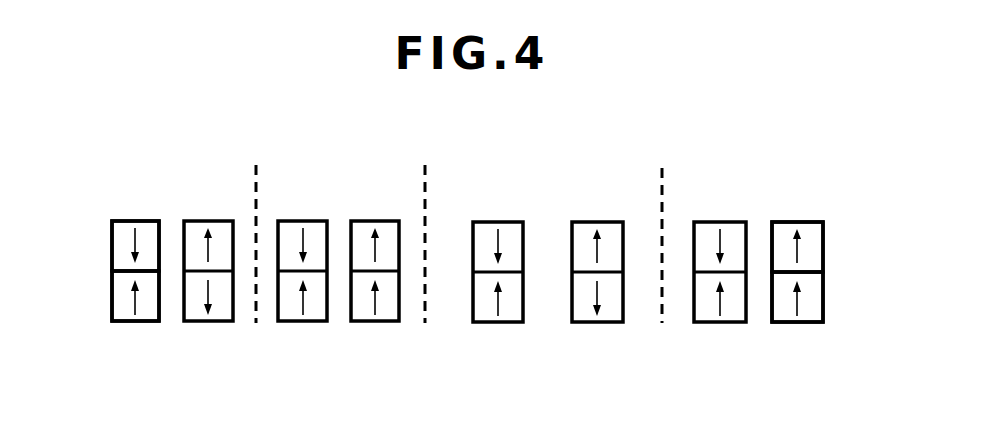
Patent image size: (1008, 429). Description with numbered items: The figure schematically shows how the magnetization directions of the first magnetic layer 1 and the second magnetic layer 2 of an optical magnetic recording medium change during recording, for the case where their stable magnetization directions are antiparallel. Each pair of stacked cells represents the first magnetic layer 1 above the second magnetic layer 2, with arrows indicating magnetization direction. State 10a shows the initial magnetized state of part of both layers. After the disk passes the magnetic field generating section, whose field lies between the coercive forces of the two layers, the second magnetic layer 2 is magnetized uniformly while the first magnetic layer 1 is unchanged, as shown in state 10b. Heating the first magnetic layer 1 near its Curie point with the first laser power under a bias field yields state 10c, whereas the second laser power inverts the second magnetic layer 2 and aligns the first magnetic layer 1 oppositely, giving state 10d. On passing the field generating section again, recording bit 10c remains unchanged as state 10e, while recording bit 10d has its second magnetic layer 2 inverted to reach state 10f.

The initial magnetized state 10a is at (176, 215).
The uniformly magnetized state 10b is at (343, 215).
The recording bit at first laser power 10c is at (498, 216).
The recording bit at second laser power 10d is at (603, 216).
The unchanged recording bit state 10e is at (723, 216).
The inverted recording bit state 10f is at (801, 216).
The first magnetic layer 1 is at (111, 249).
The second magnetic layer 2 is at (111, 300).